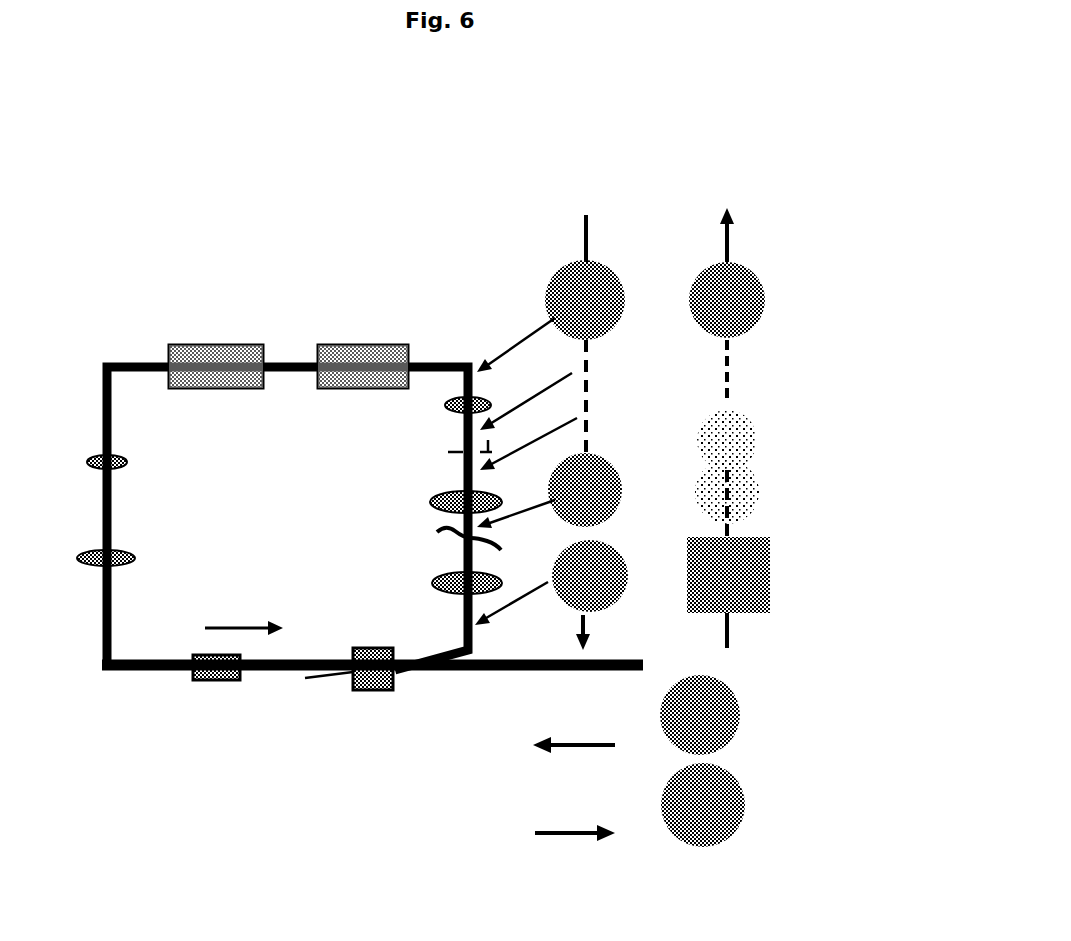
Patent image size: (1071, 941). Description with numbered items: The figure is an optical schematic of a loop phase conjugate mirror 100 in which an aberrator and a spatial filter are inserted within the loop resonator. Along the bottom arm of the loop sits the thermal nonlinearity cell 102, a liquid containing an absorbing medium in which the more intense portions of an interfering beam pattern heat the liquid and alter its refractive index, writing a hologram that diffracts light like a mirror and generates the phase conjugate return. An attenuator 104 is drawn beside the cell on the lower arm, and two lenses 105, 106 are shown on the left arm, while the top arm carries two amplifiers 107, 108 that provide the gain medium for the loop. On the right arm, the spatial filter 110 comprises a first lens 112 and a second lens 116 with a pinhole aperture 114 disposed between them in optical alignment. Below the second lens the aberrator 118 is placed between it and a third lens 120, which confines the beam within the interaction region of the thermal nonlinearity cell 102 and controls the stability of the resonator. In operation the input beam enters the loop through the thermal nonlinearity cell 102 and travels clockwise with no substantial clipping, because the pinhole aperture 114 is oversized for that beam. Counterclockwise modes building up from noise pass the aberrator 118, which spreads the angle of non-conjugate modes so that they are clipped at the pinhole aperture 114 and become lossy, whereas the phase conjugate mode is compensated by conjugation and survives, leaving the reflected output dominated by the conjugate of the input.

The phase conjugate loop system 100 is at (745, 158).
The thermal nonlinearity cell 102 is at (395, 688).
The attenuator 104 is at (200, 655).
The lens 105 is at (97, 565).
The lens 106 is at (76, 482).
The amplifier 107 is at (218, 345).
The amplifier 108 is at (350, 345).
The spatial filter 110 is at (352, 500).
The first lens 112 is at (480, 397).
The pinhole aperture 114 is at (482, 452).
The second lens 116 is at (488, 497).
The aberrator 118 is at (505, 547).
The third lens 120 is at (490, 584).